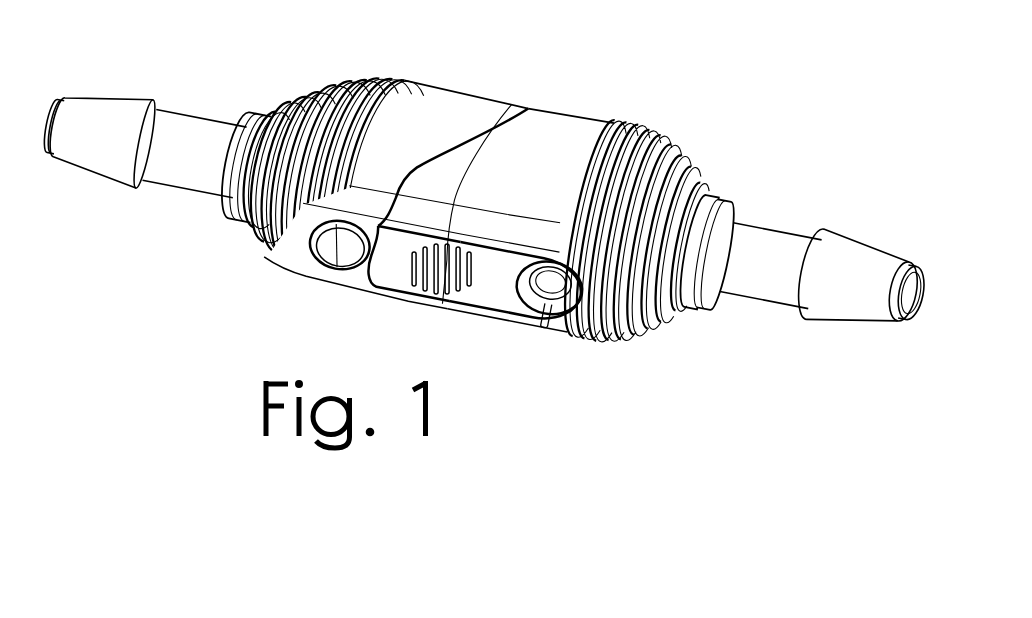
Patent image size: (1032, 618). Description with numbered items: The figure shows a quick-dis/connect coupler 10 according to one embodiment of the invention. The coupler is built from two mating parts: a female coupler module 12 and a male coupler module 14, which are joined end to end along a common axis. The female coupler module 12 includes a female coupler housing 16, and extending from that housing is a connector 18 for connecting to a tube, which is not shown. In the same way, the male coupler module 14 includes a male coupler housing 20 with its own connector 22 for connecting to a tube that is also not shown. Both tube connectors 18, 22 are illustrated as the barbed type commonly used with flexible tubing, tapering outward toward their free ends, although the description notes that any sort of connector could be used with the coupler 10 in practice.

The quick-dis/connect coupler 10 is at (518, 418).
The female coupler module 12 is at (221, 263).
The male coupler module 14 is at (693, 353).
The female coupler housing 16 is at (445, 100).
The connector 18 is at (83, 119).
The male coupler housing 20 is at (572, 132).
The connector 22 is at (850, 265).